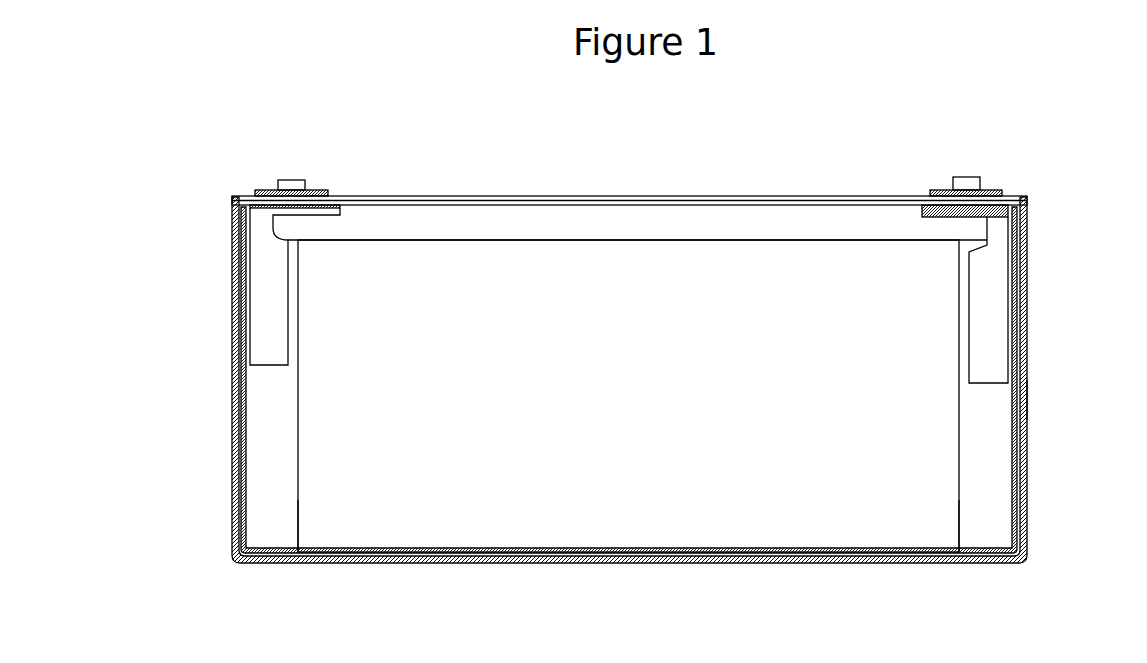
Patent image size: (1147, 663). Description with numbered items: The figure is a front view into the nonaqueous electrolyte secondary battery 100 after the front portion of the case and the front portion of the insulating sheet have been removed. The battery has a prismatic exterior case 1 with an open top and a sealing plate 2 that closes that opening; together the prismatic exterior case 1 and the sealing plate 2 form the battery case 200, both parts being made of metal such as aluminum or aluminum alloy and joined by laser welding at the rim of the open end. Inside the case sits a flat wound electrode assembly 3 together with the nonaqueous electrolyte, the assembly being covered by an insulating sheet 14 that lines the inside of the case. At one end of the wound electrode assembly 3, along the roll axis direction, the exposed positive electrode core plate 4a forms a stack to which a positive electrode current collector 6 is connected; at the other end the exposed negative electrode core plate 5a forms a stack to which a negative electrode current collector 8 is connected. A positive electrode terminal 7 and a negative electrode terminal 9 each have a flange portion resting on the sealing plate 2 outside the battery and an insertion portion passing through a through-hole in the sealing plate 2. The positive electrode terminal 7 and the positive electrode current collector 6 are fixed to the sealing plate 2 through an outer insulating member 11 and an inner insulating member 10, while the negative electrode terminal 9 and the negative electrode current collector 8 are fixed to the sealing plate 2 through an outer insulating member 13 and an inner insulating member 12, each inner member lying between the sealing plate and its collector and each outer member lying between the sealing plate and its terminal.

The nonaqueous electrolyte secondary battery 100 is at (207, 103).
The prismatic exterior case 1 is at (1028, 452).
The sealing plate 2 is at (493, 196).
The wound electrode assembly 3 is at (637, 543).
The positive electrode core plate 4a is at (990, 548).
The negative electrode core plate 5a is at (261, 540).
The positive electrode current collector 6 is at (995, 288).
The positive electrode terminal 7 is at (965, 177).
The negative electrode current collector 8 is at (267, 310).
The negative electrode terminal 9 is at (291, 180).
The inner insulating member 10 is at (980, 205).
The outer insulating member 11 is at (935, 189).
The inner insulating member 12 is at (342, 205).
The outer insulating member 13 is at (325, 189).
The insulating sheet 14 is at (243, 500).
The battery case 200 is at (1031, 406).